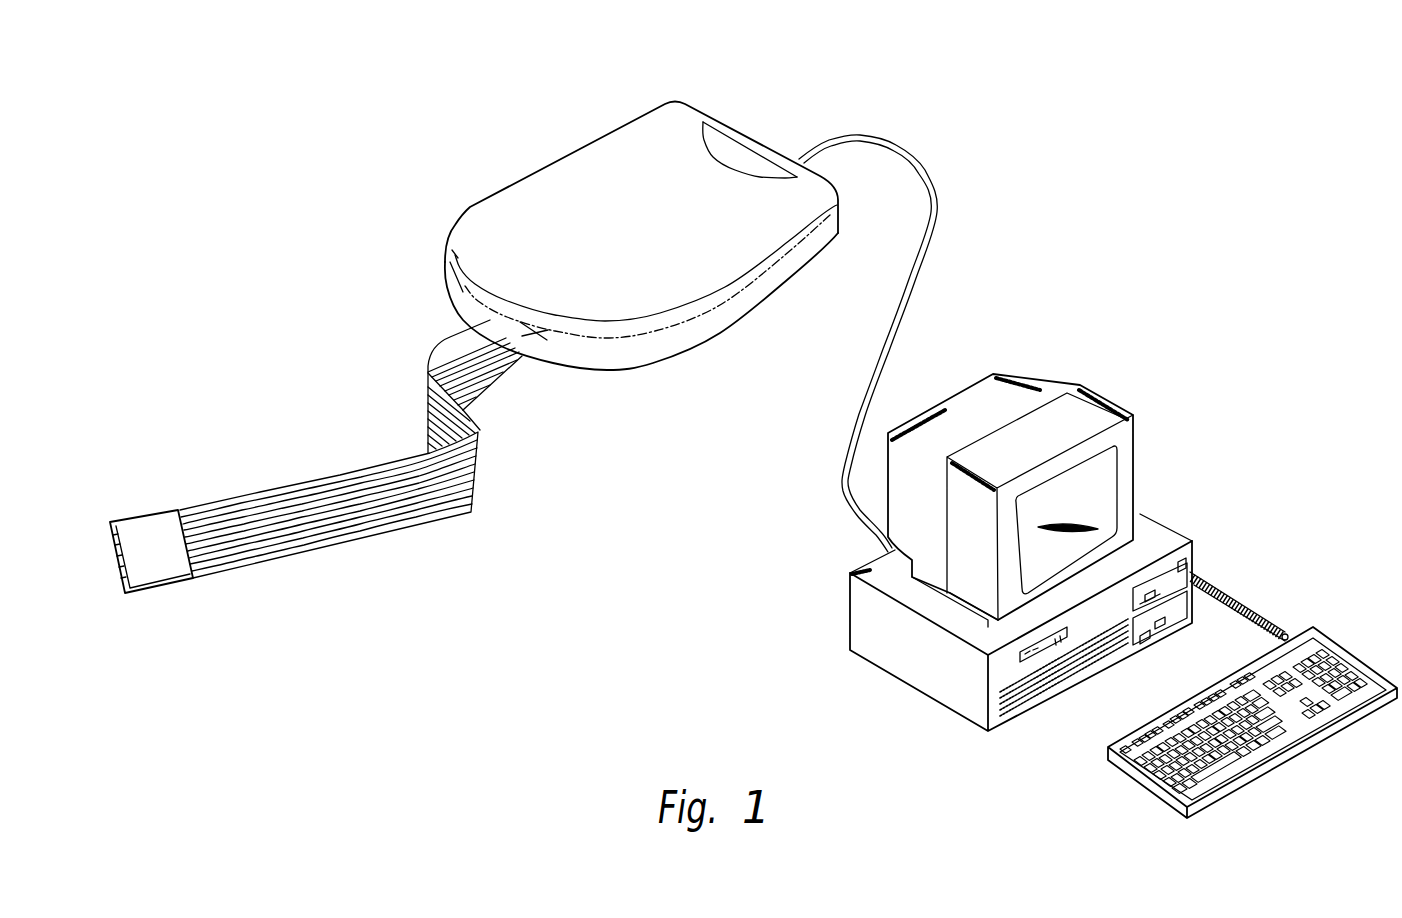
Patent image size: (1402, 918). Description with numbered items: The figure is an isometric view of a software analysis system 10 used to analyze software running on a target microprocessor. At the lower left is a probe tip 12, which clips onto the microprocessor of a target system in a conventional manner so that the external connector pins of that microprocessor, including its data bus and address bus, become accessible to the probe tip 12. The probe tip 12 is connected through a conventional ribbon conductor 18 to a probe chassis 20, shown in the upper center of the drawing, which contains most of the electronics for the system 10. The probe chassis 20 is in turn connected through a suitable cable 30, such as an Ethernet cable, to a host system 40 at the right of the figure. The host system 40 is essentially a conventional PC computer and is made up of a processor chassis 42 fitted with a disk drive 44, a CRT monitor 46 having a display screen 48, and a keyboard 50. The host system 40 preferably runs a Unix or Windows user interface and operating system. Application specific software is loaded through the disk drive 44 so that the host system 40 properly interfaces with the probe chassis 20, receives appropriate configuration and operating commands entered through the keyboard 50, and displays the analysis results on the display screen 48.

The software analysis system 10 is at (1006, 81).
The probe tip 12 is at (158, 593).
The ribbon conductor 18 is at (425, 528).
The probe chassis 20 is at (520, 185).
The cable 30 is at (914, 253).
The host system 40 is at (1263, 403).
The processor chassis 42 is at (1157, 530).
The disk drive 44 is at (1173, 583).
The CRT monitor 46 is at (1032, 500).
The display screen 48 is at (1090, 507).
The keyboard 50 is at (1317, 648).